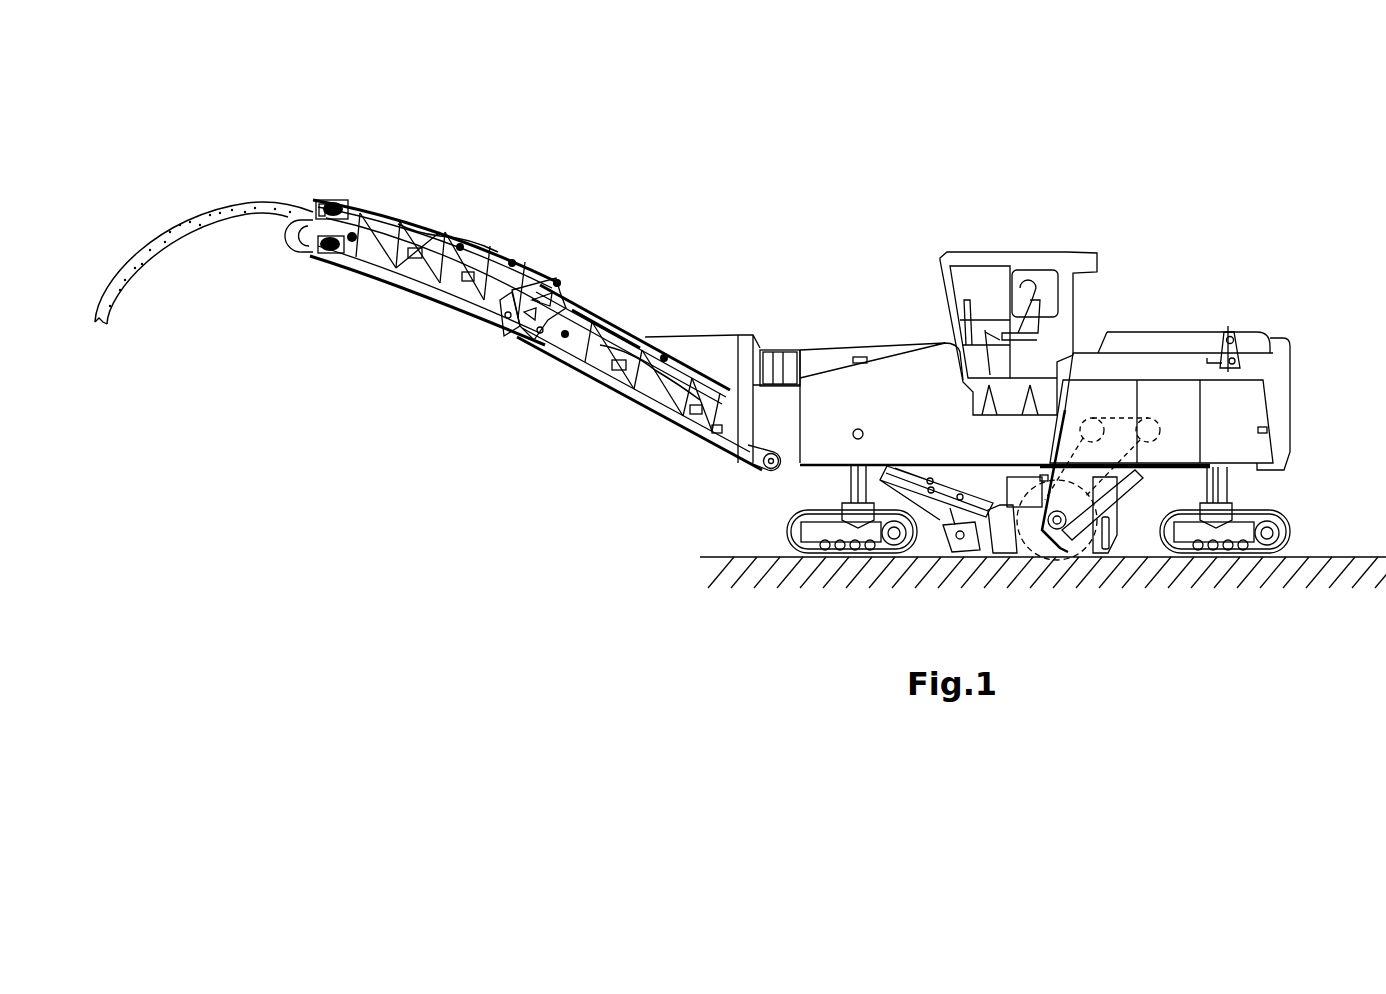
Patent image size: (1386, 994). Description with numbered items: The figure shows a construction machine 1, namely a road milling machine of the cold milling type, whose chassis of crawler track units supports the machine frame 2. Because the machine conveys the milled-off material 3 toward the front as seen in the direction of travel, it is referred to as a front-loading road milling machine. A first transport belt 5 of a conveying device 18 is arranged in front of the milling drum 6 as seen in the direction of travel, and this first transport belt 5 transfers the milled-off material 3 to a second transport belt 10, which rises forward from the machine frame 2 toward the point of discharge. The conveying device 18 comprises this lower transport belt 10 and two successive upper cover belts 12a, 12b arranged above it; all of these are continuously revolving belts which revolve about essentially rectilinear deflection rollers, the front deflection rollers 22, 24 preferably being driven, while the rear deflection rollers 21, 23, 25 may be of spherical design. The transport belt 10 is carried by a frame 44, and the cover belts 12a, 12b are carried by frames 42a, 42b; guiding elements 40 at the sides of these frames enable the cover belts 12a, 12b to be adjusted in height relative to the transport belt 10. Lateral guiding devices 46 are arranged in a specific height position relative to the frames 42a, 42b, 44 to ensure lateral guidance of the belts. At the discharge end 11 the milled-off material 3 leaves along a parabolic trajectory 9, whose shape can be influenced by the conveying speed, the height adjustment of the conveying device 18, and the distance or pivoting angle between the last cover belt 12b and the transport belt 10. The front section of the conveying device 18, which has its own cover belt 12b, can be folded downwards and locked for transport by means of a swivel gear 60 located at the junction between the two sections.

The construction machine 1 is at (1014, 345).
The machine frame 2 is at (918, 410).
The milled-off material 3 is at (165, 232).
The first transport belt 5 is at (915, 507).
The milling drum 6 is at (1085, 548).
The parabolic trajectory 9 is at (182, 272).
The second transport belt 10 is at (568, 323).
The discharge end 11 is at (556, 310).
The cover belt 12a is at (606, 335).
The cover belt 12b is at (496, 258).
The conveying device 18 is at (595, 230).
The rear deflection roller 21 is at (768, 472).
The front deflection roller 22 is at (330, 212).
The rear deflection roller 23 is at (492, 320).
The front deflection roller 24 is at (560, 310).
The rear deflection roller 25 is at (760, 356).
The guiding elements 40 is at (320, 222).
The frame 42a is at (616, 345).
The frame 42b is at (404, 220).
The frame 44 is at (313, 258).
The lateral guiding devices 46 is at (462, 245).
The swivel gear 60 is at (568, 276).